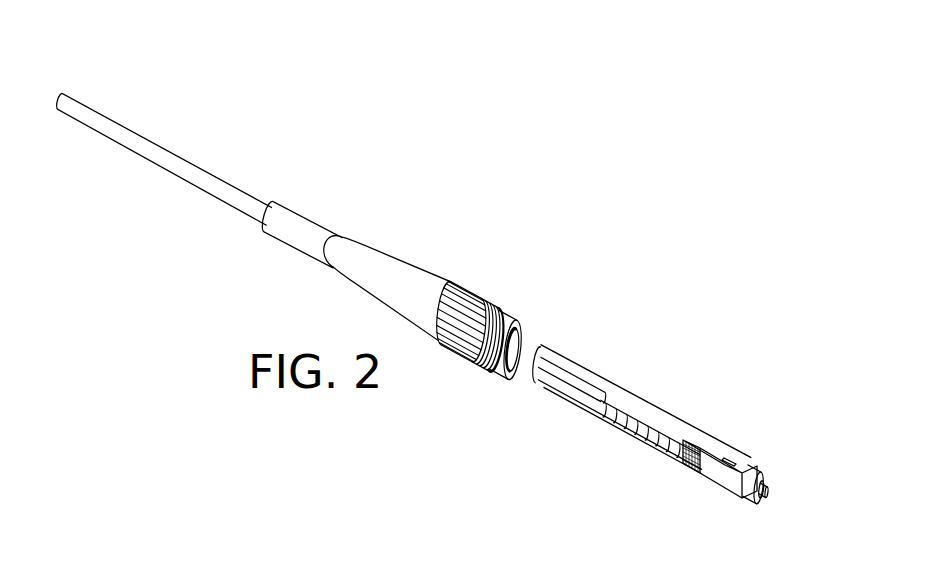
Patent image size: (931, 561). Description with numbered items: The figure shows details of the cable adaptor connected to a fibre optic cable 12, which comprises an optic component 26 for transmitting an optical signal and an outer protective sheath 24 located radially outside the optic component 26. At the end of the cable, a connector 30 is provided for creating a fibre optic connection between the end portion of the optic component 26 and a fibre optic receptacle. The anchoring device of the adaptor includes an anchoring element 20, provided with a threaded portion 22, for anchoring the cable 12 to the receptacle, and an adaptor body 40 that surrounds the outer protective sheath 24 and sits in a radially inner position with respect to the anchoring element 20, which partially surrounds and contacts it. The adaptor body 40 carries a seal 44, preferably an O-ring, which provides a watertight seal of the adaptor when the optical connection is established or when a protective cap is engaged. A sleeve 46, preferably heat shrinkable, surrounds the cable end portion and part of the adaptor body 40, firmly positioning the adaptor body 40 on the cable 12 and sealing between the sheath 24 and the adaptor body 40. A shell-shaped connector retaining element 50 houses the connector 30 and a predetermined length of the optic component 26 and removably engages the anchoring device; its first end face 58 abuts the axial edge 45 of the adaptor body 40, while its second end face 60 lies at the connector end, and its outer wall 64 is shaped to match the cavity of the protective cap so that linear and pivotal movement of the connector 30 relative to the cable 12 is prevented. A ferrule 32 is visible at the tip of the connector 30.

The fibre optic cable 12 is at (130, 108).
The outer protective sheath 24 is at (178, 165).
The sleeve 46 is at (380, 258).
The anchoring element 20 is at (461, 291).
The threaded portion 22 is at (493, 305).
The seal 44 is at (503, 374).
The adaptor body 40 is at (534, 340).
The axial edge 45 is at (533, 382).
The connector retaining element 50 is at (648, 400).
The first end face 58 is at (543, 342).
The optic component 26 is at (600, 393).
The connector 30 is at (717, 479).
The outer wall 64 is at (750, 457).
The second end face 60 is at (773, 473).
The ferrule 32 is at (769, 491).